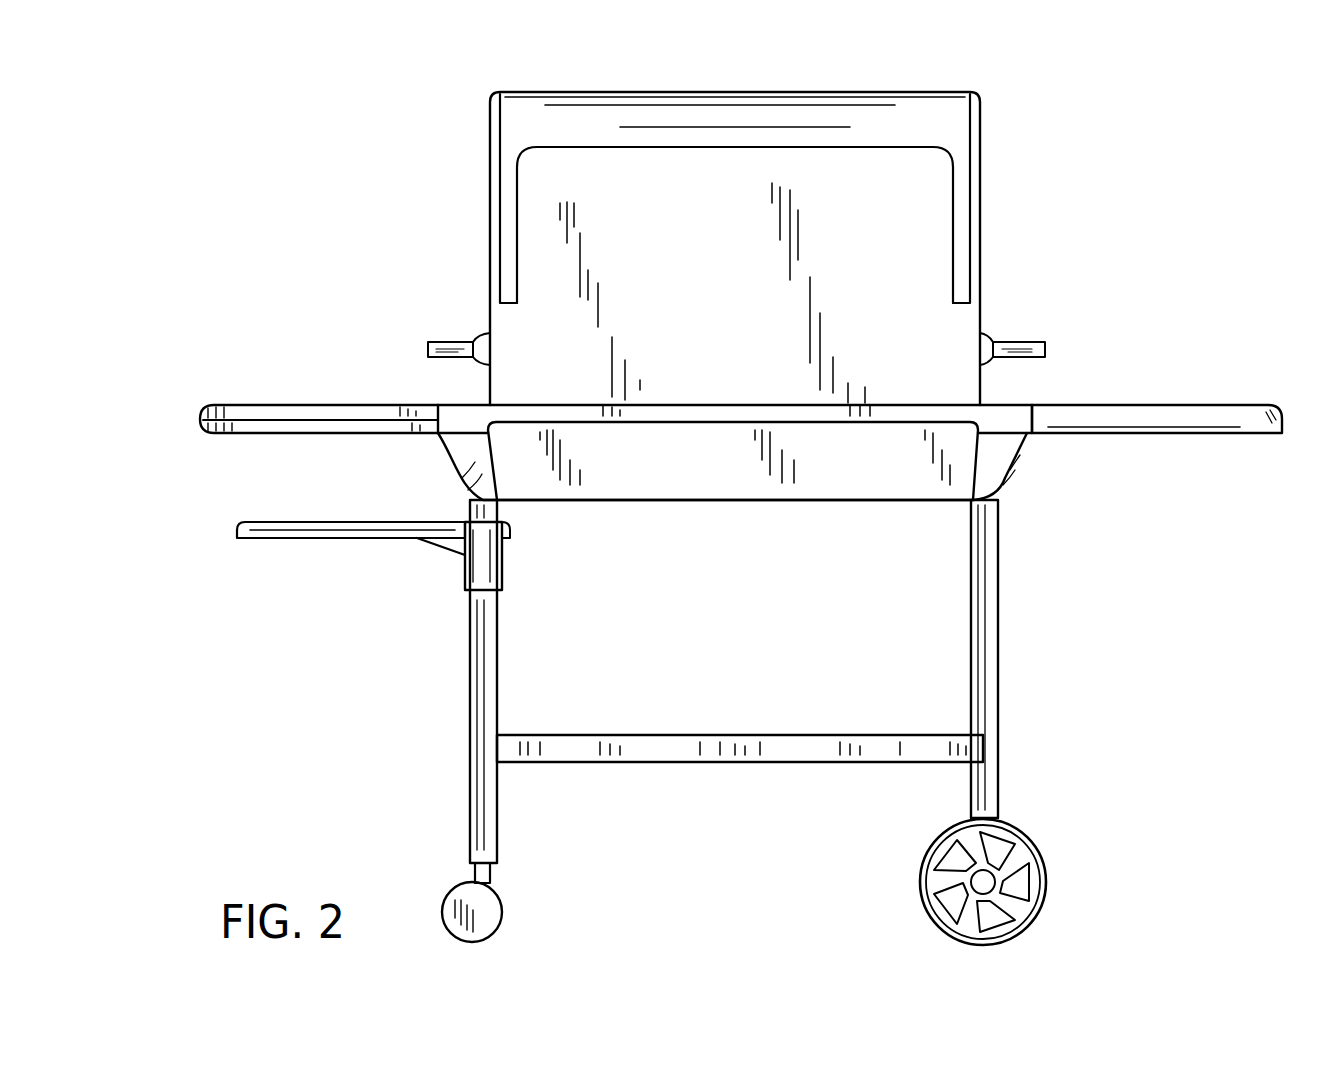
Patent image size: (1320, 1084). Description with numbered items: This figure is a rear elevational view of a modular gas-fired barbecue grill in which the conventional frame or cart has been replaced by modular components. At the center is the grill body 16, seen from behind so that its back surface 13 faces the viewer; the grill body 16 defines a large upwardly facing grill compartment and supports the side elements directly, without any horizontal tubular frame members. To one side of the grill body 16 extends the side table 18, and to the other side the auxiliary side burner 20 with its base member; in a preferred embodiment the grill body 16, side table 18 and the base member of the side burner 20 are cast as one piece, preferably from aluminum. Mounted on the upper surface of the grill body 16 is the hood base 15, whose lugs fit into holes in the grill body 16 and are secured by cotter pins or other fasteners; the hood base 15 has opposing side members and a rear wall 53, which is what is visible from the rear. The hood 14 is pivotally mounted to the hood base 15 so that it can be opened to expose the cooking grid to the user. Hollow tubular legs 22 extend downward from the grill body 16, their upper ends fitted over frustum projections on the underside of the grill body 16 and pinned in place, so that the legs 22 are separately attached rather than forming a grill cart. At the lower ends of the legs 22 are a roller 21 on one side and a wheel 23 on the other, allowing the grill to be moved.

The back surface 13 is at (517, 462).
The hood 14 is at (950, 128).
The hood base 15 is at (923, 332).
The grill body 16 is at (928, 480).
The side table 18 is at (267, 410).
The side burner 20 is at (1222, 413).
The roller 21 is at (490, 910).
The tubular legs 22 is at (480, 672).
The wheel 23 is at (938, 857).
The rear wall 53 is at (915, 250).